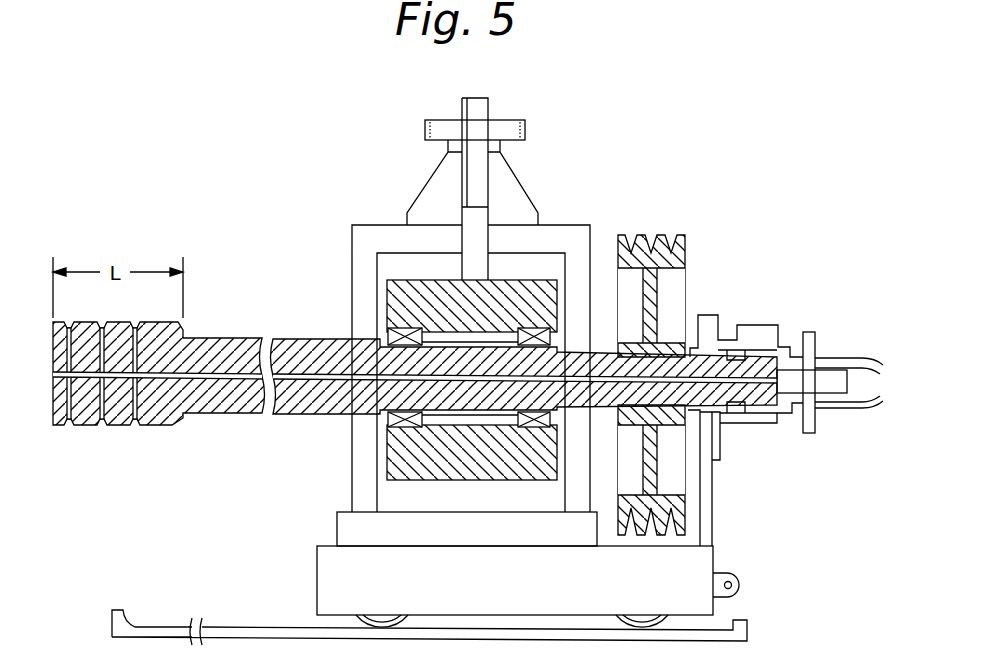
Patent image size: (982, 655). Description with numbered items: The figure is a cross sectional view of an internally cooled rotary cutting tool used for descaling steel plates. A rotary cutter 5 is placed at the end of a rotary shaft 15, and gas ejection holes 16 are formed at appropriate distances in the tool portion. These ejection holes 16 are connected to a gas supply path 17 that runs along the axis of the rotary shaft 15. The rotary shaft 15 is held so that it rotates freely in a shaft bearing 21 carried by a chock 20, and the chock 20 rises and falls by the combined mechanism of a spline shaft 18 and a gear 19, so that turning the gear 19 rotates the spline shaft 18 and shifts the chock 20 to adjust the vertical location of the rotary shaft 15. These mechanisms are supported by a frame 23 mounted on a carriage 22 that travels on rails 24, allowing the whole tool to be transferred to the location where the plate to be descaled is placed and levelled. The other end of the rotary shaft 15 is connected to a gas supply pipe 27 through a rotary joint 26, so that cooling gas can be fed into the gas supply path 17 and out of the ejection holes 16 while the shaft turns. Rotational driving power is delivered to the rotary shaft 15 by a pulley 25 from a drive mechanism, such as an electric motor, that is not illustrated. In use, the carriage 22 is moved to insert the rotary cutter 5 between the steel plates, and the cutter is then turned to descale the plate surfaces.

The rotary cutter 5 is at (117, 322).
The rotary shaft 15 is at (233, 345).
The gas ejection holes 16 is at (103, 426).
The gas supply path 17 is at (203, 384).
The spline shaft 18 is at (489, 109).
The gear 19 is at (425, 126).
The chock 20 is at (387, 306).
The shaft bearing 21 is at (388, 428).
The carriage 22 is at (706, 567).
The frame 23 is at (566, 235).
The rails 24 is at (258, 626).
The pulley 25 is at (686, 246).
The rotary joint 26 is at (777, 325).
The gas supply pipe 27 is at (852, 396).